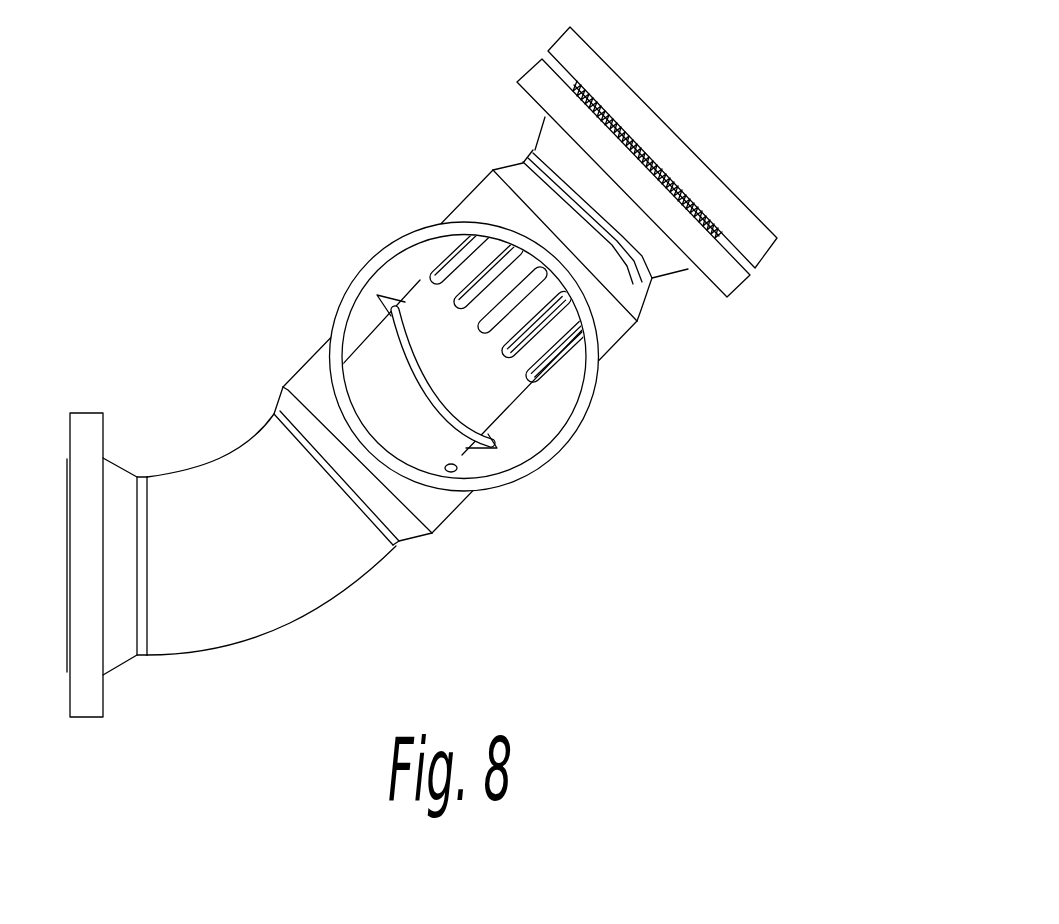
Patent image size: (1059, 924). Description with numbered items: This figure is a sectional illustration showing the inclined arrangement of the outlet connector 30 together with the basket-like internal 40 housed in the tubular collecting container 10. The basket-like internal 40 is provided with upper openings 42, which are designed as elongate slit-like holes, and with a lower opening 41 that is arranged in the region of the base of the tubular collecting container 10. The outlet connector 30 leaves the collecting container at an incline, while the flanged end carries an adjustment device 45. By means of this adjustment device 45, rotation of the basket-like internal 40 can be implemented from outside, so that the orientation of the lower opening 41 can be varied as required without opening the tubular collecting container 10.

The tubular collecting container 10 is at (356, 280).
The outlet connector 30 is at (201, 468).
The basket-like internal 40 is at (462, 466).
The lower opening 41 is at (456, 472).
The upper openings 42 is at (558, 352).
The adjustment device 45 is at (652, 113).